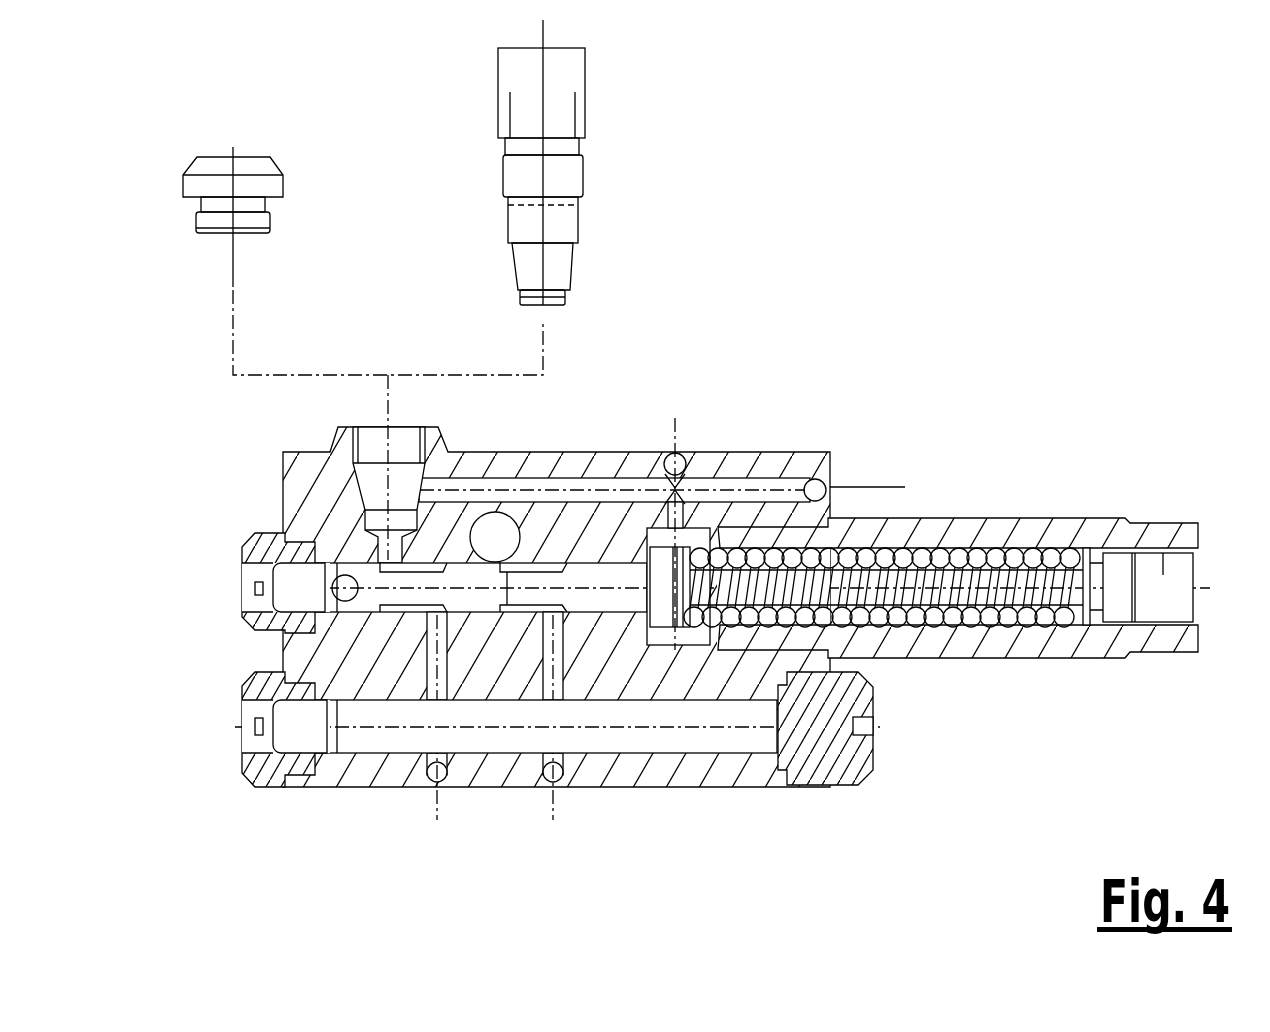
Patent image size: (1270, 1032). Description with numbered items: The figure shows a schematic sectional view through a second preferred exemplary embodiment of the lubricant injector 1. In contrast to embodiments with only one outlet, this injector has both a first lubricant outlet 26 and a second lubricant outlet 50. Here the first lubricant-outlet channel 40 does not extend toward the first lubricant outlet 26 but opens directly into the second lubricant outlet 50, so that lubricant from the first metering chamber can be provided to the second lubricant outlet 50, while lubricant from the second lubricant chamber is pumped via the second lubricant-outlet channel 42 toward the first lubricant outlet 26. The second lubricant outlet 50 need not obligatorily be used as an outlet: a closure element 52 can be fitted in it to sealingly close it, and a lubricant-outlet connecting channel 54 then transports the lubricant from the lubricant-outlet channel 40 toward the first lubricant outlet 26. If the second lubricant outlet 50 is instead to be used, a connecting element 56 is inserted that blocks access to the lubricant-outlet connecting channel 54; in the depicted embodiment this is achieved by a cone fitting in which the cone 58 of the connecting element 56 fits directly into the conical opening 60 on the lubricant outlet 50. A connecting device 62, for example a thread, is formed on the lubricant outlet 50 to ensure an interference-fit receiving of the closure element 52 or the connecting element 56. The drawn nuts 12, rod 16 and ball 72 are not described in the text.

The lubricant injector 1 is at (835, 243).
The plug nuts 12 is at (243, 540).
The rod 16 is at (363, 790).
The first lubricant outlet 26 is at (1160, 518).
The first lubricant-outlet channel 40 is at (307, 450).
The second lubricant-outlet channel 42 is at (643, 613).
The second lubricant outlet 50 is at (377, 423).
The closure element 52 is at (277, 157).
The lubricant-outlet connecting channel 54 is at (673, 418).
The connecting element 56 is at (545, 103).
The cone 58 is at (560, 273).
The conical opening 60 is at (480, 448).
The connecting device 62 is at (650, 396).
The ball 72 is at (495, 535).